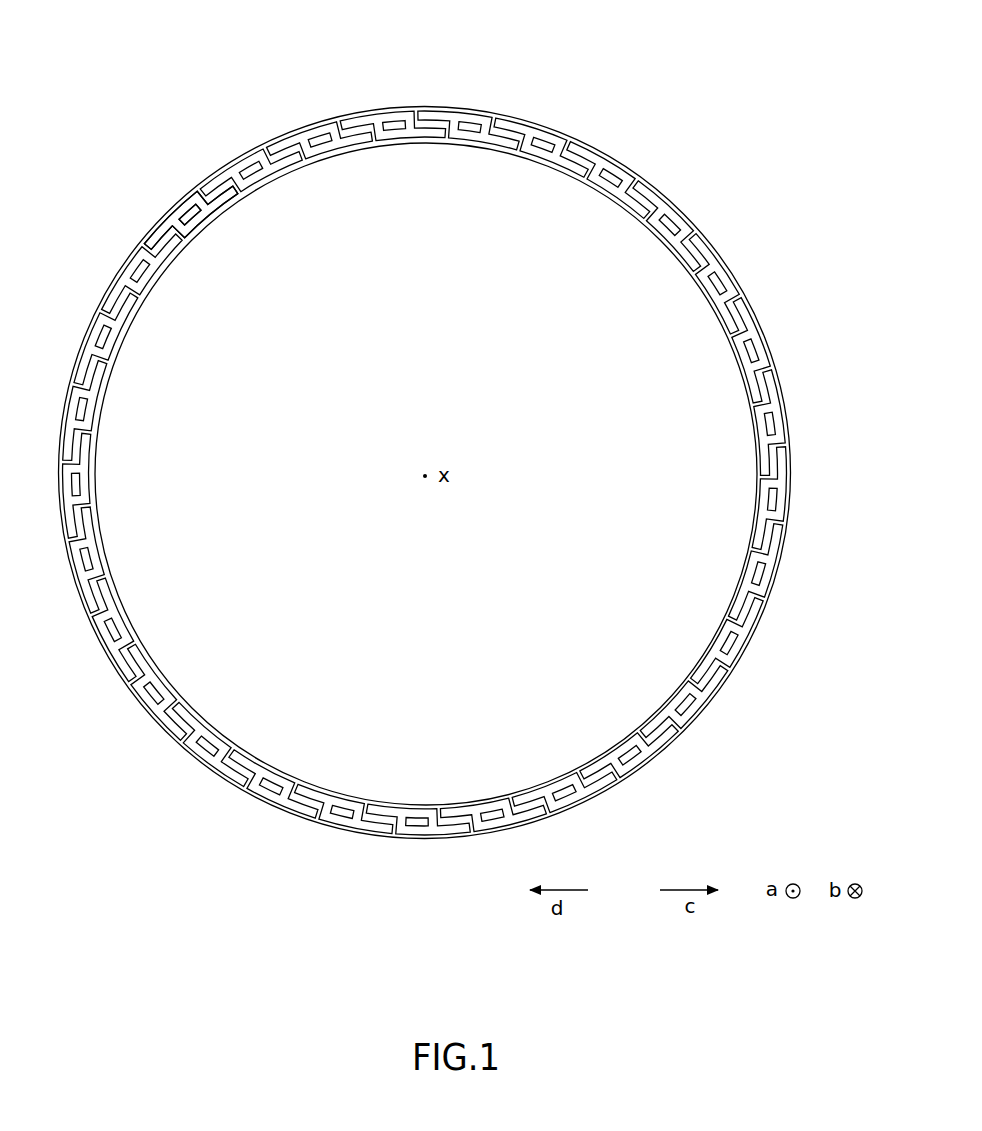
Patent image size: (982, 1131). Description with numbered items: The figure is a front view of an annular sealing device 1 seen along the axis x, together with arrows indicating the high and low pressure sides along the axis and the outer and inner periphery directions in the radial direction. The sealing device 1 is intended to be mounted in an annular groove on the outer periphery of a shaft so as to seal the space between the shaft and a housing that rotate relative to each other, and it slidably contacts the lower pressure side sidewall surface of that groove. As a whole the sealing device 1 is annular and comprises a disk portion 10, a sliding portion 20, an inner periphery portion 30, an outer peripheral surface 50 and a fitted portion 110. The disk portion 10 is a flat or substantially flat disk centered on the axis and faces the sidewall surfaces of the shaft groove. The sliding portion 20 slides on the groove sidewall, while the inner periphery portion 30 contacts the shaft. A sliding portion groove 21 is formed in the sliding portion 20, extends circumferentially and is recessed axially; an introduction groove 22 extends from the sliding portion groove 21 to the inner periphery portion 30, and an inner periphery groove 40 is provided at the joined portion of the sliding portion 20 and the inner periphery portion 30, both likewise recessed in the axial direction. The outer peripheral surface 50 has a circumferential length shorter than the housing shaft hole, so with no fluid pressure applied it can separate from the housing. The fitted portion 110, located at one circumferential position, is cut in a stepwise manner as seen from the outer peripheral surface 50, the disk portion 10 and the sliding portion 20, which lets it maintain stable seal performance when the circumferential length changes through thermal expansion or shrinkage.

The sealing device 1 is at (770, 126).
The disk portion 10 is at (707, 213).
The sliding portion 20 is at (184, 264).
The sliding portion groove 21 is at (159, 231).
The introduction groove 22 is at (196, 231).
The inner periphery portion 30 is at (98, 478).
The inner periphery groove 40 is at (352, 146).
The outer peripheral surface 50 is at (603, 144).
The fitted portion 110 is at (493, 106).